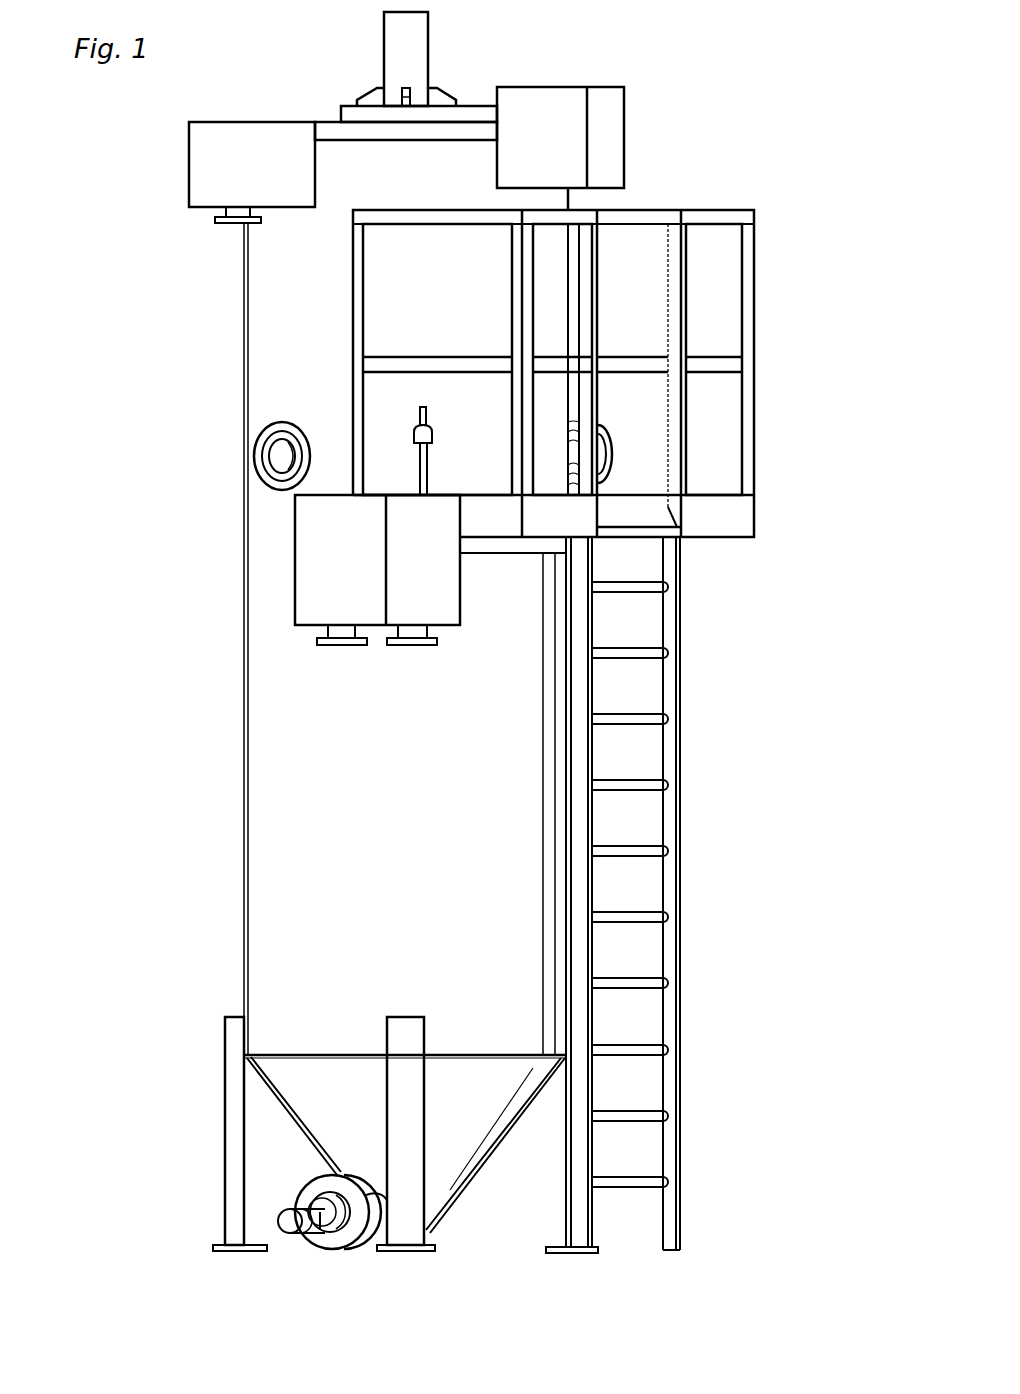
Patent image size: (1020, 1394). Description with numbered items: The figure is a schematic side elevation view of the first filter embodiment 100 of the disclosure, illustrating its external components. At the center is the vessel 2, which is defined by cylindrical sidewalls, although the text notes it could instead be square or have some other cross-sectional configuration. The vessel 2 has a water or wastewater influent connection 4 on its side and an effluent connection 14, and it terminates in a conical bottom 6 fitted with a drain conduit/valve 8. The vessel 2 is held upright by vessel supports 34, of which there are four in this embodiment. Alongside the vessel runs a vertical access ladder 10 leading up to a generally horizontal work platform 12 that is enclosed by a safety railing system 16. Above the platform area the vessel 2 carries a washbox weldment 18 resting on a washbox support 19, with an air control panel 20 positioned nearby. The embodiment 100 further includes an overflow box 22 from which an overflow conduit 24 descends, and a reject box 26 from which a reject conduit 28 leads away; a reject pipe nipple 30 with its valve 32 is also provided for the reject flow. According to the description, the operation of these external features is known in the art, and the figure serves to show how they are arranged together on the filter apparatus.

The first filter embodiment 100 is at (745, 96).
The vertical access ladder 10 is at (690, 823).
The vessel 2 is at (243, 790).
The water or wastewater influent connection 4 is at (253, 455).
The conical bottom 6 is at (477, 1182).
The drain conduit/valve 8 is at (330, 1248).
The work platform 12 is at (713, 497).
The effluent connection 14 is at (612, 455).
The safety railing system 16 is at (754, 340).
The washbox weldment 18 is at (428, 32).
The washbox support 19 is at (357, 103).
The air control panel 20 is at (625, 132).
The overflow box 22 is at (189, 160).
The overflow conduit 24 is at (230, 223).
The reject box 26 is at (295, 577).
The reject conduit 28 is at (413, 648).
The reject pipe nipple 30 is at (414, 432).
The valve 32 is at (421, 408).
The vessel supports 34 is at (225, 1117).